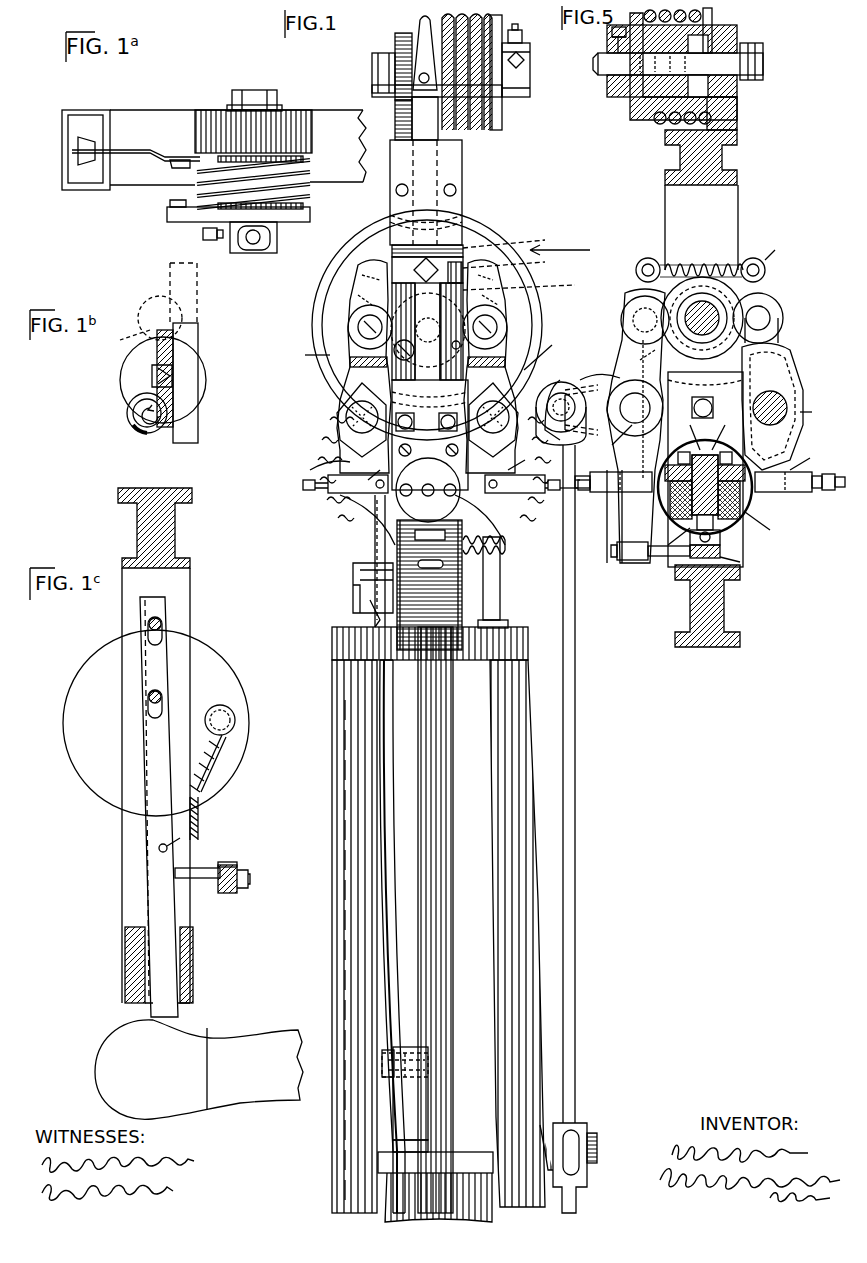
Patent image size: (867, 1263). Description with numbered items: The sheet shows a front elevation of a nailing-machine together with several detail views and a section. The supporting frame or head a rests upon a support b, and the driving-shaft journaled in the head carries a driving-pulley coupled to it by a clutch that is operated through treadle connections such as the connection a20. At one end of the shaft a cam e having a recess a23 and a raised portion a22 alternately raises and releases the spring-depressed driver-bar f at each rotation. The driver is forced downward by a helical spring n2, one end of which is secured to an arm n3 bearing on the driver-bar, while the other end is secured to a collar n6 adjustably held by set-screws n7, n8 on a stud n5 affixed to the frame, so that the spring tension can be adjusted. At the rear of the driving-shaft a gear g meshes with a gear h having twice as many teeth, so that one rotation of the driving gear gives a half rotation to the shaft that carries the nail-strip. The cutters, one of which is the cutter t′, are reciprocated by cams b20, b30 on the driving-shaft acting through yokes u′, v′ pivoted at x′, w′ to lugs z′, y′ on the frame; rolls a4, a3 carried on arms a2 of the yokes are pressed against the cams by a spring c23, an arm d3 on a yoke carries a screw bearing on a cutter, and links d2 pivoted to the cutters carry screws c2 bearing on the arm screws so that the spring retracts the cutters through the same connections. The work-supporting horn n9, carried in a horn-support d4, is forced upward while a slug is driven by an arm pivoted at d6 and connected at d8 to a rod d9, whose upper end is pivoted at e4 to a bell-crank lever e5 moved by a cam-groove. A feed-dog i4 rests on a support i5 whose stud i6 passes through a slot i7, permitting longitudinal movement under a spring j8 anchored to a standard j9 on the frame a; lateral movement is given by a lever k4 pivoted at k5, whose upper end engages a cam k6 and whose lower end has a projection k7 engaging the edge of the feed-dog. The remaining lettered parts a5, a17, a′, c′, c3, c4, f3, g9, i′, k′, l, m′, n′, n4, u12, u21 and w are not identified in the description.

In FIG. 1A, the supporting frame or head a is at (135, 172).
In FIG. 1C, the supporting frame or head a is at (125, 965).
In FIG. 1, the supporting frame or head a is at (345, 640).
In FIG. 5, the supporting frame or head a is at (690, 590).
In FIG. 1, the arm a2 is at (510, 268).
In FIG. 5, the arm a2 is at (632, 345).
In FIG. 1, the roll a3 is at (507, 322).
In FIG. 5, the roll a3 is at (622, 310).
In FIG. 1, the roll a4 is at (348, 320).
In FIG. 5, the roll a4 is at (784, 310).
In FIG. 1, the block a5 is at (400, 1105).
In FIG. 5, the block a5 is at (600, 377).
In FIG. 1, the rod a17 is at (578, 705).
In FIG. 1, the connection a20 is at (575, 1200).
In FIG. 1B, the raised portion a22 is at (150, 310).
In FIG. 1B, the recess a23 is at (178, 350).
In FIG. 5, the bearing part a′ is at (723, 430).
In FIG. 1, the support b is at (345, 787).
In FIG. 1, the cam b20 is at (345, 285).
In FIG. 5, the cam b20 is at (785, 246).
In FIG. 5, the cam b30 is at (705, 469).
In FIG. 5, the bearing cap c′ is at (759, 525).
In FIG. 1, the screw c2 is at (462, 248).
In FIG. 5, the screw c2 is at (845, 477).
In FIG. 1, the screw head c3 is at (559, 498).
In FIG. 5, the screw head c3 is at (590, 485).
In FIG. 1, the guide c4 is at (526, 248).
In FIG. 5, the spring c23 is at (703, 262).
In FIG. 1, the link d2 is at (436, 490).
In FIG. 5, the link d2 is at (825, 490).
In FIG. 1, the arm d3 is at (330, 508).
In FIG. 1, the horn-support d4 is at (435, 1187).
In FIG. 1, the pivot d6 is at (420, 1062).
In FIG. 1, the connection d8 is at (520, 510).
In FIG. 1, the rod d9 is at (385, 833).
In FIG. 1B, the cam e is at (138, 388).
In FIG. 1, the cam e is at (470, 278).
In FIG. 5, the cam e is at (740, 305).
In FIG. 1, the pivot e4 is at (355, 585).
In FIG. 1, the bell-crank lever e5 is at (375, 540).
In FIG. 1B, the driver-bar f is at (190, 388).
In FIG. 1, the driver-bar f is at (445, 270).
In FIG. 1C, the foot f3 is at (199, 1069).
In FIG. 1, the gear g is at (519, 279).
In FIG. 1, the spring g9 is at (490, 572).
In FIG. 1, the gear h is at (330, 455).
In FIG. 5, the pin i′ is at (687, 535).
In FIG. 1C, the feed-dog i4 is at (170, 990).
In FIG. 1, the feed-dog i4 is at (398, 540).
In FIG. 5, the feed-dog i4 is at (722, 553).
In FIG. 1C, the support i5 is at (172, 615).
In FIG. 1C, the stud i6 is at (162, 624).
In FIG. 1C, the slot i7 is at (145, 636).
In FIG. 1C, the spring j8 is at (200, 800).
In FIG. 1C, the standard j9 is at (241, 711).
In FIG. 5, the link k′ is at (571, 410).
In FIG. 1C, the lever k4 is at (228, 893).
In FIG. 5, the lever k4 is at (618, 540).
In FIG. 5, the pivot k5 is at (612, 437).
In FIG. 5, the cam k6 is at (640, 285).
In FIG. 1C, the projection k7 is at (203, 878).
In FIG. 5, the projection k7 is at (665, 556).
In FIG. 5, the plate l is at (751, 565).
In FIG. 5, the bearing part m′ is at (690, 432).
In FIG. 5, the bearing n′ is at (750, 510).
In FIG. 1A, the helical spring n2 is at (222, 200).
In FIG. 1, the helical spring n2 is at (502, 28).
In FIG. 5, the helical spring n2 is at (658, 122).
In FIG. 1A, the arm n3 is at (120, 145).
In FIG. 1, the arm n3 is at (425, 22).
In FIG. 5, the arm n3 is at (712, 16).
In FIG. 1A, the hatched block n4 is at (268, 128).
In FIG. 1, the hatched block n4 is at (395, 42).
In FIG. 5, the hatched block n4 is at (740, 32).
In FIG. 1A, the stud n5 is at (262, 90).
In FIG. 1, the stud n5 is at (383, 73).
In FIG. 5, the stud n5 is at (722, 60).
In FIG. 1A, the collar n6 is at (172, 218).
In FIG. 1, the collar n6 is at (500, 105).
In FIG. 5, the collar n6 is at (632, 105).
In FIG. 1A, the set-screw n7 is at (245, 255).
In FIG. 1, the set-screw n7 is at (522, 35).
In FIG. 5, the set-screw n7 is at (612, 32).
In FIG. 1A, the set-screw n8 is at (210, 240).
In FIG. 1, the set-screw n8 is at (530, 64).
In FIG. 1, the work-supporting horn n9 is at (450, 762).
In FIG. 1, the cutter t′ is at (379, 468).
In FIG. 1, the yoke u′ is at (306, 354).
In FIG. 1B, the guide u12 is at (134, 324).
In FIG. 1B, the nut u21 is at (150, 378).
In FIG. 1, the yoke v′ is at (547, 352).
In FIG. 5, the yoke v′ is at (790, 362).
In FIG. 5, the hub w is at (788, 400).
In FIG. 1, the pivot w′ is at (512, 400).
In FIG. 1, the pivot x′ is at (340, 413).
In FIG. 1, the lug y′ is at (526, 460).
In FIG. 5, the lug y′ is at (814, 412).
In FIG. 1, the lug z′ is at (316, 462).
In FIG. 5, the lug z′ is at (625, 420).